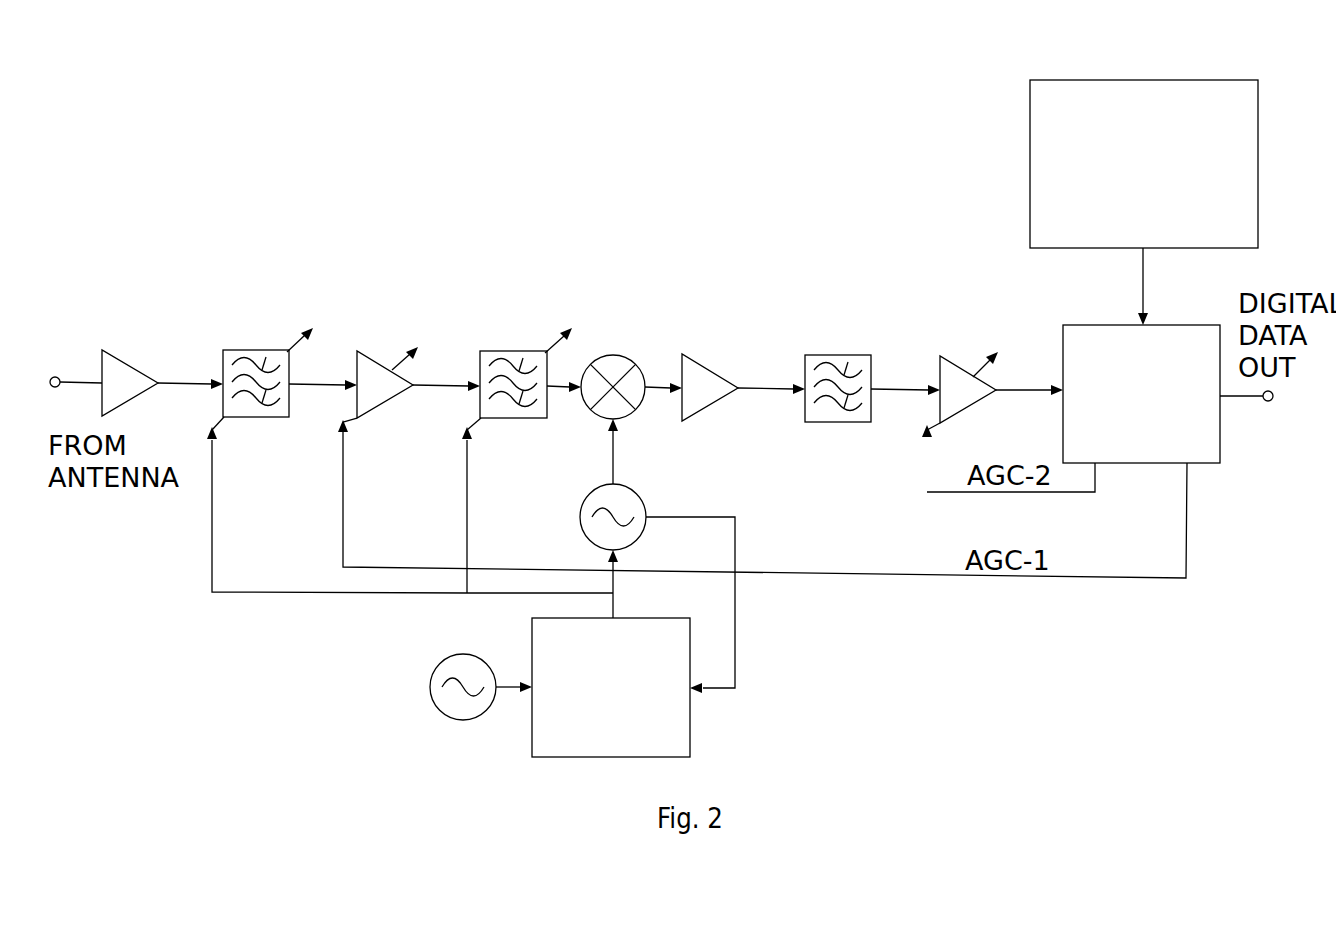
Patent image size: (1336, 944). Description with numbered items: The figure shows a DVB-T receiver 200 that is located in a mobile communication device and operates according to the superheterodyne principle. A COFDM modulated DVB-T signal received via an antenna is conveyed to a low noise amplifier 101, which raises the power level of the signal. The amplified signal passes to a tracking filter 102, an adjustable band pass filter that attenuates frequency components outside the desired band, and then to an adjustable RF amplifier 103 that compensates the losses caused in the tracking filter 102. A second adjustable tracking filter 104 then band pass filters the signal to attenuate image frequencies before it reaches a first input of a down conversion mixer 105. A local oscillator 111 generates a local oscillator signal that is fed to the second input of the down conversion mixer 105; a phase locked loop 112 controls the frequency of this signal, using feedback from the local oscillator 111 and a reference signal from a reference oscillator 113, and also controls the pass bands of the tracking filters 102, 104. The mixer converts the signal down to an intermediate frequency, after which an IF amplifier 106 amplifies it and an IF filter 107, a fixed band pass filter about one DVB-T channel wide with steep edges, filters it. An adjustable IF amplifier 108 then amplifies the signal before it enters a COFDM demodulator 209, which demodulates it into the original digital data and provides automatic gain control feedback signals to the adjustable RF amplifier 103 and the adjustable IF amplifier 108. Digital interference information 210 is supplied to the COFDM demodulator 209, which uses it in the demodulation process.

The DVB-T receiver 200 is at (120, 177).
The low noise amplifier 101 is at (115, 349).
The tracking filter 102 is at (230, 350).
The adjustable RF amplifier 103 is at (373, 350).
The second adjustable tracking filter 104 is at (492, 351).
The down conversion mixer 105 is at (617, 355).
The IF amplifier 106 is at (697, 354).
The IF filter 107 is at (815, 355).
The adjustable IF amplifier 108 is at (955, 358).
The local oscillator 111 is at (630, 487).
The phase locked loop 112 is at (690, 741).
The reference oscillator 113 is at (430, 688).
The COFDM demodulator 209 is at (1105, 325).
The digital interference information 210 is at (1143, 80).